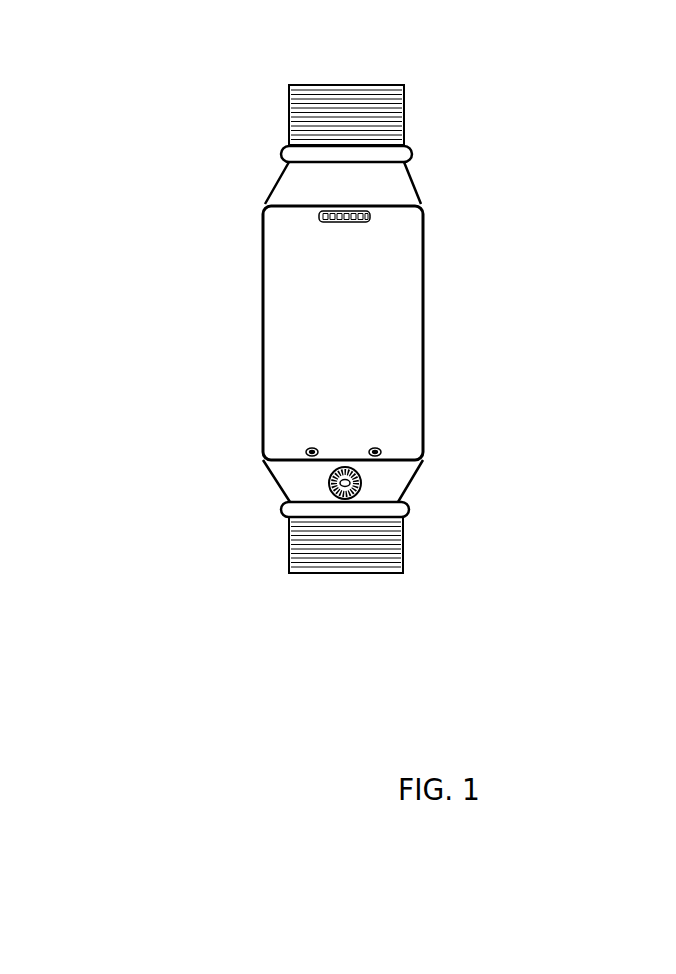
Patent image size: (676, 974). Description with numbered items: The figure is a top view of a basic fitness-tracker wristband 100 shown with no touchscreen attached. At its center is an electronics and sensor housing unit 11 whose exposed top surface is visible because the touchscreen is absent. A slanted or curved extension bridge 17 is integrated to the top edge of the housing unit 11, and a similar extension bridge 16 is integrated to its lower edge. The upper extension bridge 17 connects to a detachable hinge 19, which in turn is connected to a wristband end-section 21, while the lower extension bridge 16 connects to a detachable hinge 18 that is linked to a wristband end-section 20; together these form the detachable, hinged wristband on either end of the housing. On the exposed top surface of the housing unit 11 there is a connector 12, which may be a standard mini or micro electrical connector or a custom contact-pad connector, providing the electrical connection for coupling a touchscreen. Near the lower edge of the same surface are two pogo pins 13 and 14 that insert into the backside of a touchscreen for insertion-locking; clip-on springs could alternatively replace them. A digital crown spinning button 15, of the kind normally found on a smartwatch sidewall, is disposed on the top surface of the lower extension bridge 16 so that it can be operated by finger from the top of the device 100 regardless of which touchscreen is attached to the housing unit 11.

The fitness-tracker wristband 100 is at (172, 72).
The electronics and sensor housing unit 11 is at (263, 323).
The connector 12 is at (319, 216).
The pogo pin 13 is at (306, 452).
The pogo pin 14 is at (381, 452).
The digital crown spinning button 15 is at (329, 483).
The extension bridge 16 is at (400, 490).
The extension bridge 17 is at (406, 170).
The detachable hinge 18 is at (281, 510).
The detachable hinge 19 is at (412, 149).
The wristband end-section 20 is at (403, 542).
The wristband end-section 21 is at (404, 117).